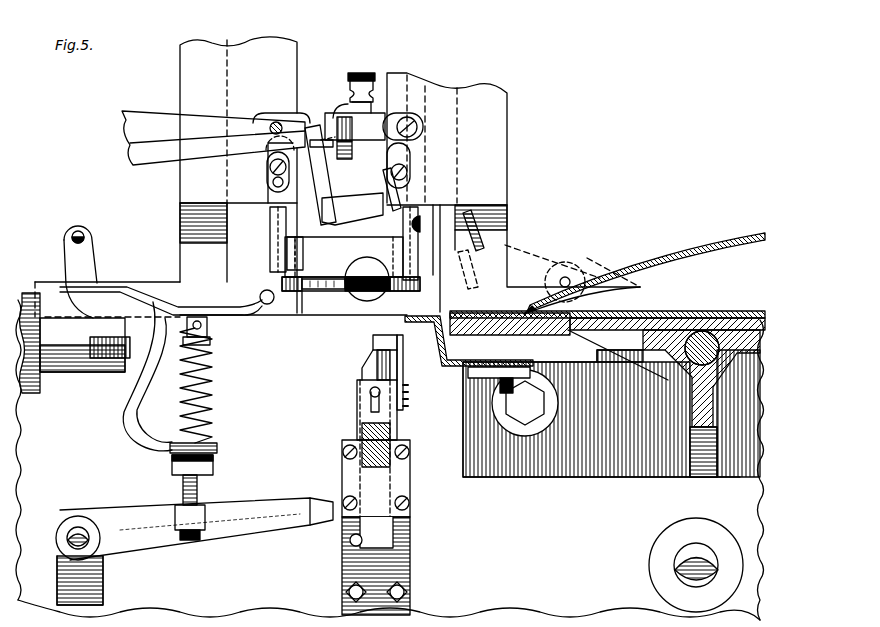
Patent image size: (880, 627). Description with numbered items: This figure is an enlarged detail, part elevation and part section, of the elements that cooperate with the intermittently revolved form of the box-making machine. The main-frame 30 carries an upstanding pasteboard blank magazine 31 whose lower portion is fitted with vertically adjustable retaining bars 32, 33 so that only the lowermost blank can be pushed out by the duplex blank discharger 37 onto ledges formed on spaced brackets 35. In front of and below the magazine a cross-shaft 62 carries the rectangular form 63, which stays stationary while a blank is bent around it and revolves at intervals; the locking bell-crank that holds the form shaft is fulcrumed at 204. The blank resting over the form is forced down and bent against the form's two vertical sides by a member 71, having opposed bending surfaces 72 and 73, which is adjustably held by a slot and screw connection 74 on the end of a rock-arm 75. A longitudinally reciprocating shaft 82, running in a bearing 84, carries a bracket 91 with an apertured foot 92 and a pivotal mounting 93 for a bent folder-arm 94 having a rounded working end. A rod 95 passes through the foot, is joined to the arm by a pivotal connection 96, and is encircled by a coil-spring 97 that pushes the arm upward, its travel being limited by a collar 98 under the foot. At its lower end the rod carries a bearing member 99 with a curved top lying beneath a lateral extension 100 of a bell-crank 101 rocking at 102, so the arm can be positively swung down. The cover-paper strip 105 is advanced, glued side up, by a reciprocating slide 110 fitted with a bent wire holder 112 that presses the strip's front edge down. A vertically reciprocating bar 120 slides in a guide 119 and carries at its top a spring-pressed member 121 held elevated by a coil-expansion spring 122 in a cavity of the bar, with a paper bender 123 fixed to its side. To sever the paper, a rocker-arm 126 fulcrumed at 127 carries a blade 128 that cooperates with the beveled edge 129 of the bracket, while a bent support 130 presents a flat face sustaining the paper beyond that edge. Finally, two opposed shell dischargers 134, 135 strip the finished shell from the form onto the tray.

The main-frame 30 is at (340, 223).
The pasteboard blank magazine 31 is at (435, 148).
The retaining bar 32 is at (272, 185).
The retaining bar 33 is at (405, 185).
The bracket 35 is at (270, 258).
The duplex blank discharger 37 is at (283, 279).
The cross-shaft 62 is at (365, 265).
The rectangular form 63 is at (352, 300).
The bending member 71 is at (366, 188).
The bending surface 72 is at (340, 213).
The bending surface 73 is at (398, 195).
The slot and screw connection 74 is at (362, 138).
The rock-arm 75 is at (137, 118).
The shaft 82 is at (78, 373).
The bearing 84 is at (32, 393).
The bracket 91 is at (139, 376).
The apertured foot 92 is at (215, 447).
The pivotal mounting 93 is at (82, 233).
The bent folder-arm 94 is at (242, 305).
The rod 95 is at (200, 488).
The pivotal connection 96 is at (207, 333).
The coil-spring 97 is at (212, 386).
The collar 98 is at (213, 462).
The bearing member 99 is at (193, 530).
The lateral extension 100 is at (283, 512).
The bell-crank 101 is at (240, 528).
The bell-crank pivot 102 is at (80, 530).
The cover-paper strip 105 is at (663, 308).
The reciprocating slide 110 is at (620, 310).
The bent wire holder 112 is at (673, 245).
The guide 119 is at (378, 483).
The vertically-reciprocating bar 120 is at (387, 528).
The spring-pressed member 121 is at (382, 343).
The coil-expansion spring 122 is at (363, 462).
The paper bender 123 is at (400, 350).
The rocker-arm 126 is at (543, 253).
The fulcrum 127 is at (703, 337).
The blade 128 is at (467, 220).
The beveled edge 129 is at (447, 363).
The bent support 130 is at (410, 323).
The shell discharger 134 is at (408, 292).
The shell discharger 135 is at (313, 280).
The bell-crank fulcrum 204 is at (690, 562).